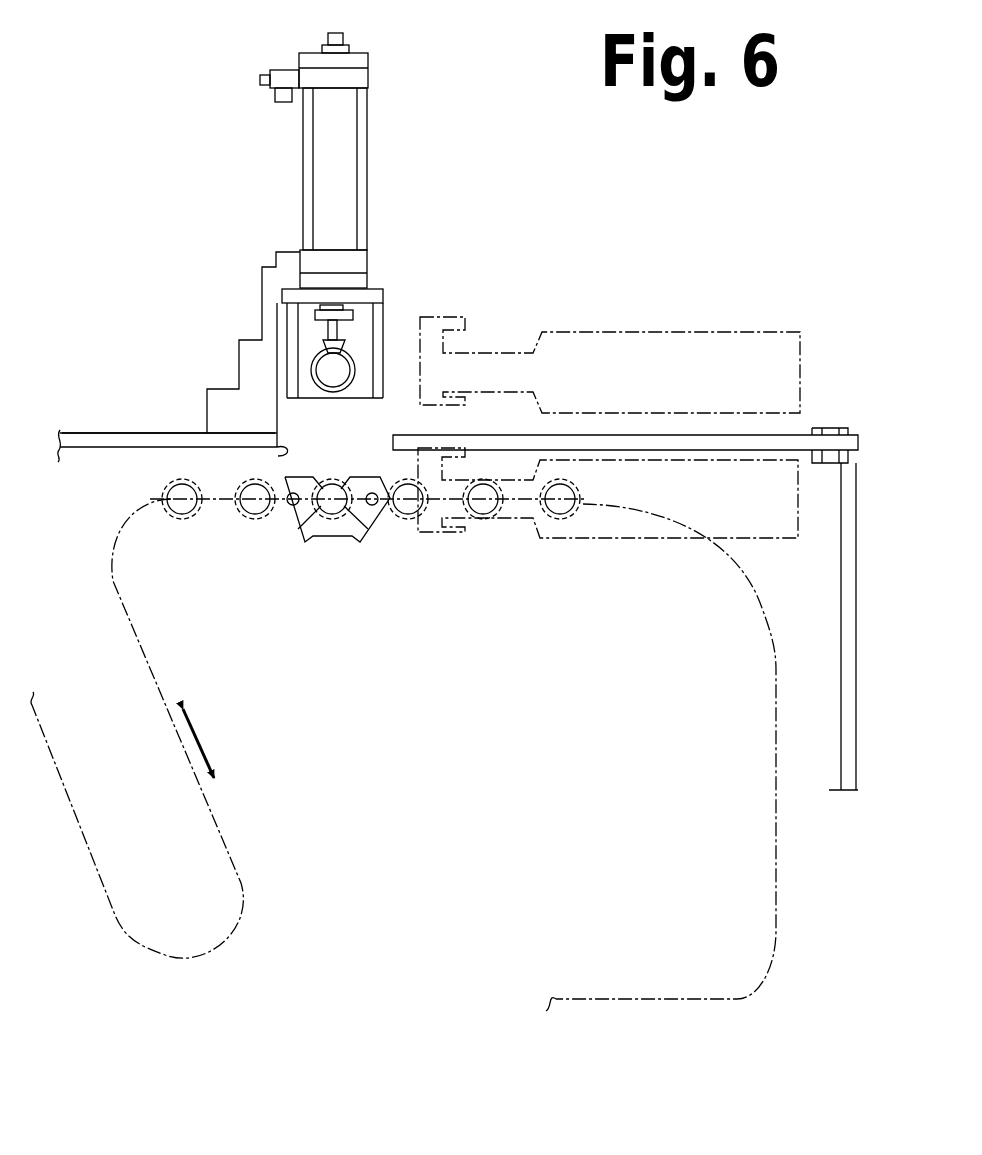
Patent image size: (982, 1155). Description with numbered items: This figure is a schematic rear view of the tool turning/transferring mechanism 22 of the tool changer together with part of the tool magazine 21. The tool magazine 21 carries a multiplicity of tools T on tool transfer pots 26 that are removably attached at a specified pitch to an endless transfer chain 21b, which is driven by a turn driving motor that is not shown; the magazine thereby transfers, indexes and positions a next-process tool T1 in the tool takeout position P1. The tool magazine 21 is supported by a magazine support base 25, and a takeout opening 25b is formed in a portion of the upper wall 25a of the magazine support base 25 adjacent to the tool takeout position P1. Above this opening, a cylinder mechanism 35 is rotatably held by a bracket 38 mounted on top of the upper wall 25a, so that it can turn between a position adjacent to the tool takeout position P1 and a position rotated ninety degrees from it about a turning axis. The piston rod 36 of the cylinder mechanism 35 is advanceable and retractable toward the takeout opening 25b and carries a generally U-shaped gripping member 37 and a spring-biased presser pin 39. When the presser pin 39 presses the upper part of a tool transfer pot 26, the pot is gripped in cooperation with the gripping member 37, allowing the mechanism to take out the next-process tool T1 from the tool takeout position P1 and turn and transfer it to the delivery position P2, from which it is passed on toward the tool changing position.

The tool magazine 21 is at (90, 546).
The endless transfer chain 21b is at (776, 728).
The tool turning/transferring mechanism 22 is at (194, 167).
The magazine support base 25 is at (90, 431).
The upper wall 25a is at (123, 433).
The takeout opening 25b is at (288, 453).
The tool transfer pot 26 is at (335, 398).
The cylinder mechanism 35 is at (375, 167).
The piston rod 36 is at (343, 310).
The gripping member 37 is at (362, 400).
The bracket 38 is at (236, 354).
The presser pin 39 is at (350, 331).
The tool T is at (186, 514).
The next-process tool T1 is at (733, 331).
The tool takeout position P1 is at (368, 527).
The delivery position P2 is at (462, 510).